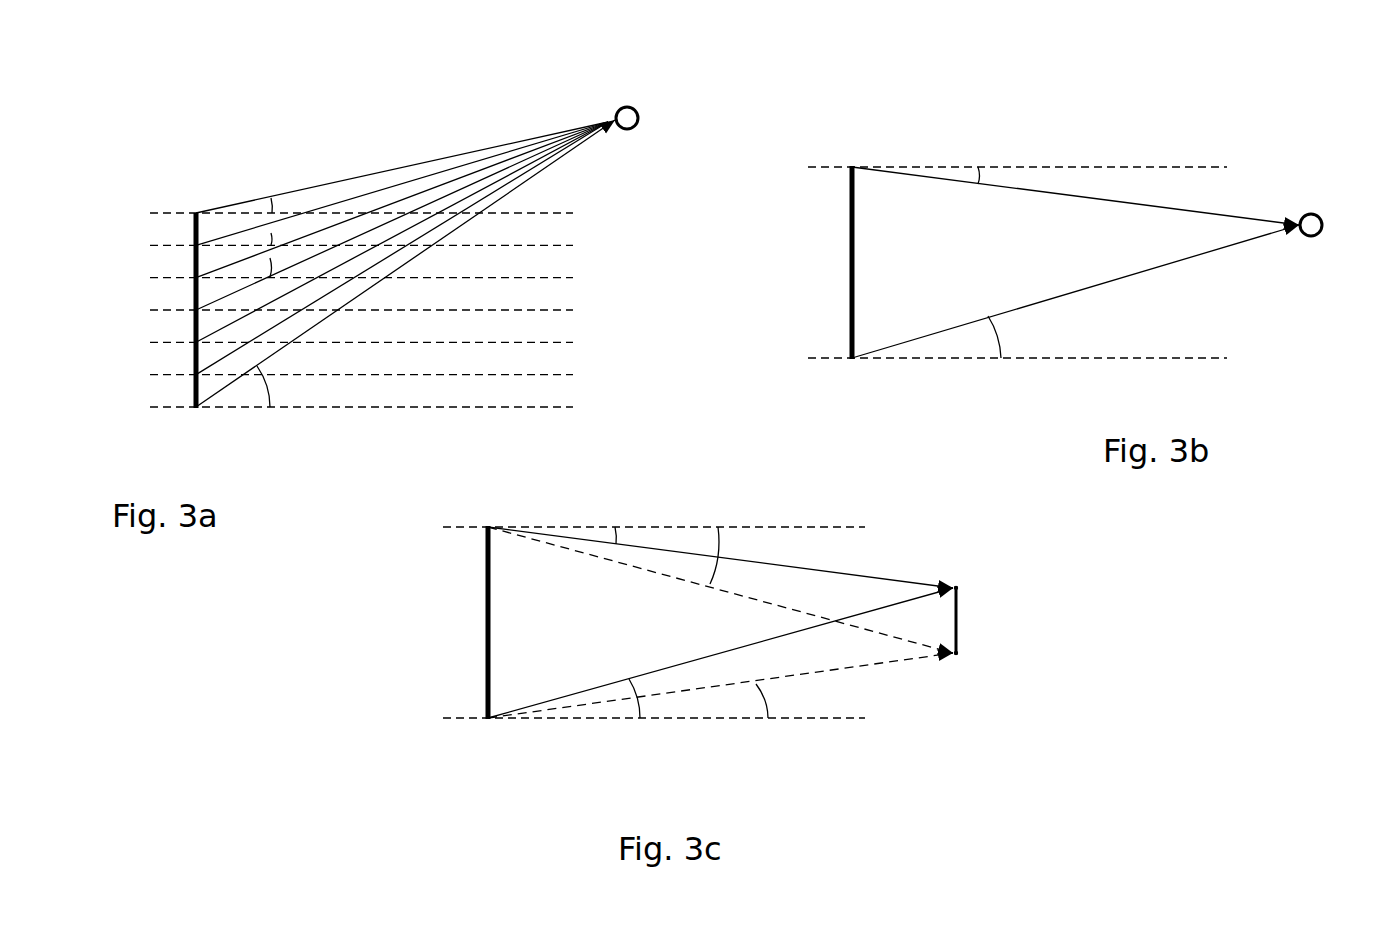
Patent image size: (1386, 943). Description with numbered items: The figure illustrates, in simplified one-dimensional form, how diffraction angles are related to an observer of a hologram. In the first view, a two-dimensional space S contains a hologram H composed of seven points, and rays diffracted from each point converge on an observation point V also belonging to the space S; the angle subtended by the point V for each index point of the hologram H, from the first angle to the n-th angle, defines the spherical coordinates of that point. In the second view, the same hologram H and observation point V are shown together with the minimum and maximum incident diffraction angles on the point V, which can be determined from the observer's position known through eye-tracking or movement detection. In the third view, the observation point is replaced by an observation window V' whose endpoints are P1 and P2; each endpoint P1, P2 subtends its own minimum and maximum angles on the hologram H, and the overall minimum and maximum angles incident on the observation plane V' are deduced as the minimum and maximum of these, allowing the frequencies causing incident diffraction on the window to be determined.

In FIG. 3a, the hologram H is at (195, 233).
In FIG. 3b, the hologram H is at (850, 184).
In FIG. 3c, the hologram H is at (487, 544).
In FIG. 3a, the two-dimensional space S is at (405, 242).
In FIG. 3a, the observation point V is at (643, 124).
In FIG. 3b, the observation point V is at (1327, 213).
In FIG. 3c, the observation window V' is at (980, 620).
In FIG. 3c, the first endpoint of the observation window P1 is at (958, 588).
In FIG. 3c, the second endpoint of the observation window P2 is at (958, 654).